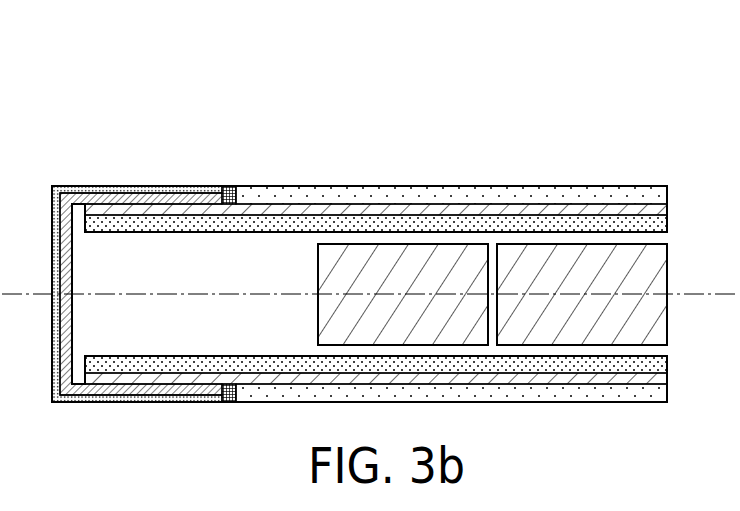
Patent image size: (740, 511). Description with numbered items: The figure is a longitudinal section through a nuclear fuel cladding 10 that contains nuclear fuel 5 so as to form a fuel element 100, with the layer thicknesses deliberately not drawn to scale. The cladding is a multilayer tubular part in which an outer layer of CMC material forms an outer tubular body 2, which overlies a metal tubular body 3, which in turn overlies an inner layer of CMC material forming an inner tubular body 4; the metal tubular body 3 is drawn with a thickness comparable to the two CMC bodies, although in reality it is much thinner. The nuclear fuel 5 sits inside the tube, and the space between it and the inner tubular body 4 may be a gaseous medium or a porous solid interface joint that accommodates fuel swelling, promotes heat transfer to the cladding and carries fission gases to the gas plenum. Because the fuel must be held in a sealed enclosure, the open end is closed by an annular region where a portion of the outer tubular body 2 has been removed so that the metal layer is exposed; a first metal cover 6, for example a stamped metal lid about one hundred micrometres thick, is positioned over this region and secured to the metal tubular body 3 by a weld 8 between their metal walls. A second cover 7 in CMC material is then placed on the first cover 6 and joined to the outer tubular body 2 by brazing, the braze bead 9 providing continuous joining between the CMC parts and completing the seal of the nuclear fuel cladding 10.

The fuel element 100 is at (674, 97).
The outer tubular body 2 is at (588, 201).
The metal tubular body 3 is at (490, 212).
The inner tubular body 4 is at (389, 206).
The nuclear fuel 5 is at (637, 271).
The first metal cover 6 is at (71, 330).
The second cover 7 is at (63, 260).
The weld 8 is at (137, 302).
The braze bead 9 is at (227, 192).
The nuclear fuel cladding 10 is at (255, 188).